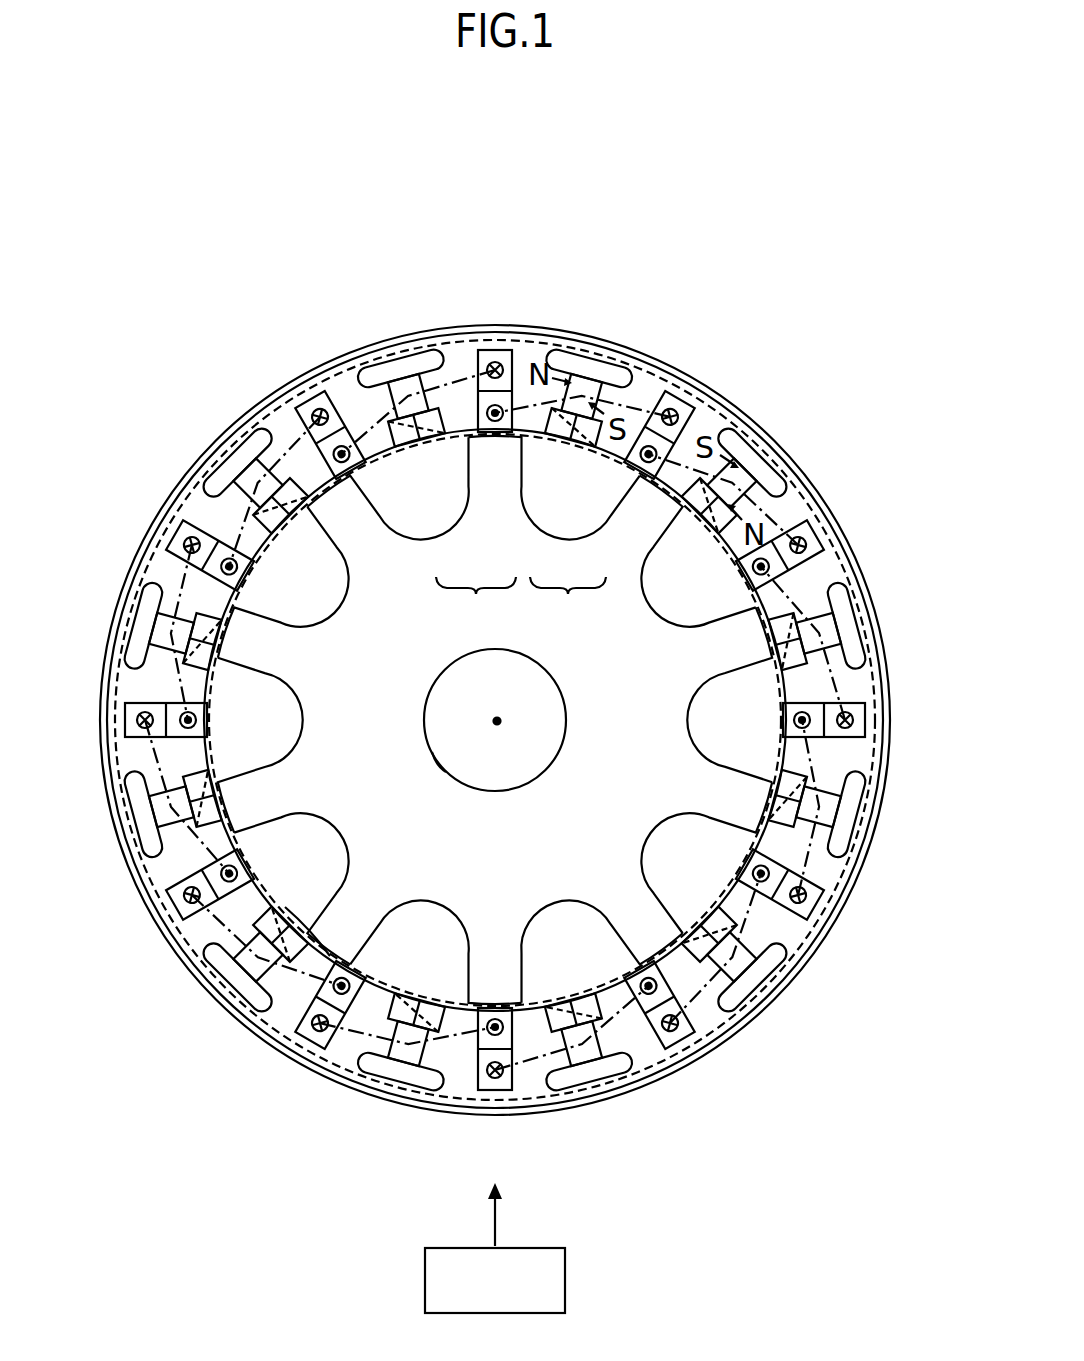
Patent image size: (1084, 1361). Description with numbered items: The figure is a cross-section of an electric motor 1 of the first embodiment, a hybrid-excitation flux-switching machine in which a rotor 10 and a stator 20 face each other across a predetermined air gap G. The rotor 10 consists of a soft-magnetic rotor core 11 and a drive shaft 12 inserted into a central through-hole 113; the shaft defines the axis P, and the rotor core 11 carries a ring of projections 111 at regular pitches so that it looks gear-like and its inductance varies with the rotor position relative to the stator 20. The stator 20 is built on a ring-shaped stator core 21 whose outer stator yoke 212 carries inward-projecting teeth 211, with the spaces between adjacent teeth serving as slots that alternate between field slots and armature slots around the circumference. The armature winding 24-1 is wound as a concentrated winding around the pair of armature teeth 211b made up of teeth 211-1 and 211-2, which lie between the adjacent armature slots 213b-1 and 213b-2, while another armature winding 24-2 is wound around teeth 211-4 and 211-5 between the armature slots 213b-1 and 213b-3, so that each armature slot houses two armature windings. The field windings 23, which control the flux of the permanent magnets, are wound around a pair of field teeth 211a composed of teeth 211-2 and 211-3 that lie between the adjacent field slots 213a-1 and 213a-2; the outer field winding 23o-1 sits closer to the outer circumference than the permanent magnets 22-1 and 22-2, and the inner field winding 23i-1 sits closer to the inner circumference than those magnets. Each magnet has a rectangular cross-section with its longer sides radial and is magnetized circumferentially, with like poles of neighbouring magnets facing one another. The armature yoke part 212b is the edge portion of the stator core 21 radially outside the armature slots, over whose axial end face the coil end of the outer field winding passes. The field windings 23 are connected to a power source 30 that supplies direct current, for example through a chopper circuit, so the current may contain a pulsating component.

The electric motor 1 is at (495, 613).
The rotor 10 is at (495, 720).
The rotor core 11 is at (495, 720).
The drive shaft 12 is at (497, 792).
The projections 111 is at (470, 458).
The through-hole 113 is at (440, 772).
The axis P is at (500, 718).
The air gap G is at (334, 946).
The stator 20 is at (366, 348).
The stator core 21 is at (465, 720).
The teeth 211 is at (205, 495).
The stator yoke 212 is at (212, 455).
The armature yoke part 212b is at (642, 365).
The tooth 211-1 is at (472, 442).
The tooth 211-2 is at (545, 458).
The tooth 211-3 is at (640, 478).
The tooth 211-4 is at (455, 410).
The tooth 211-5 is at (357, 425).
The pair of field teeth 211a is at (569, 601).
The pair of armature teeth 211b is at (477, 601).
The field slot 213a-1 is at (606, 357).
The field slot 213a-2 is at (766, 456).
The armature slot 213b-1 is at (480, 355).
The armature slot 213b-2 is at (726, 468).
The armature slot 213b-3 is at (305, 415).
The permanent magnet 22-1 is at (672, 394).
The permanent magnet 22-2 is at (815, 528).
The field windings 23 is at (684, 600).
The field winding 23o-1 is at (690, 412).
The field winding 23i-1 is at (703, 500).
The armature winding 24-1 is at (495, 348).
The armature winding 24-2 is at (392, 397).
The power source 30 is at (568, 1282).